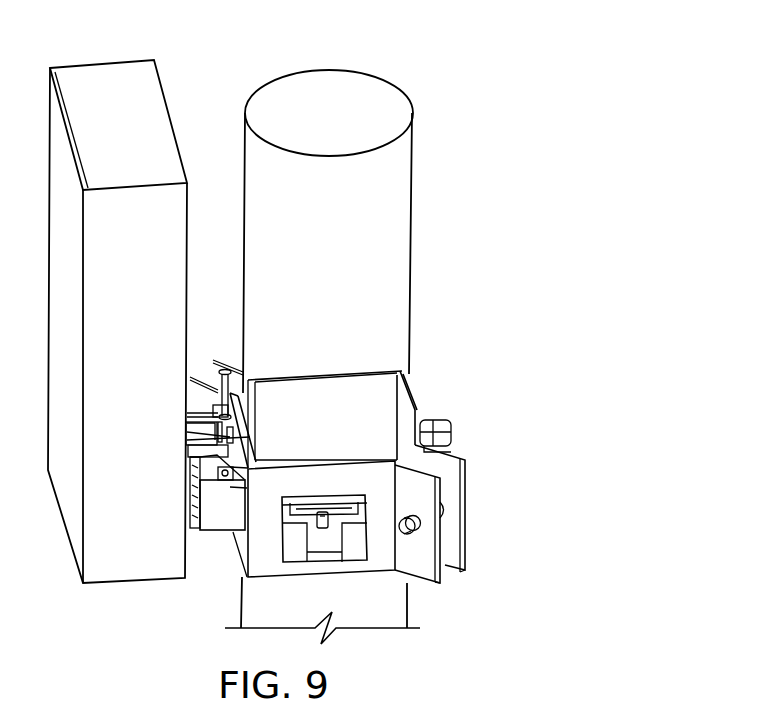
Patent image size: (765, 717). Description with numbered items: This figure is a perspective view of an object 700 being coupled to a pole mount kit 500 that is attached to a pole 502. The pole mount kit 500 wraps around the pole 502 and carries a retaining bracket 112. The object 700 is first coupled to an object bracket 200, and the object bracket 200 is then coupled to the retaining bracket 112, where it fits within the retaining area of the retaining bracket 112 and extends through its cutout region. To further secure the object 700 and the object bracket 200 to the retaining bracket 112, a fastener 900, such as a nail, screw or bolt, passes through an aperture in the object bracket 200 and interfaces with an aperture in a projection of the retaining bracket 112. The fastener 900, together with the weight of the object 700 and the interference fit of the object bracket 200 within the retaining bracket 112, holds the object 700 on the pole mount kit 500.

The object 700 is at (93, 77).
The pole 502 is at (278, 98).
The pole mount kit 500 is at (476, 395).
The fastener 900 is at (262, 372).
The object bracket 200 is at (197, 412).
The retaining bracket 112 is at (222, 528).